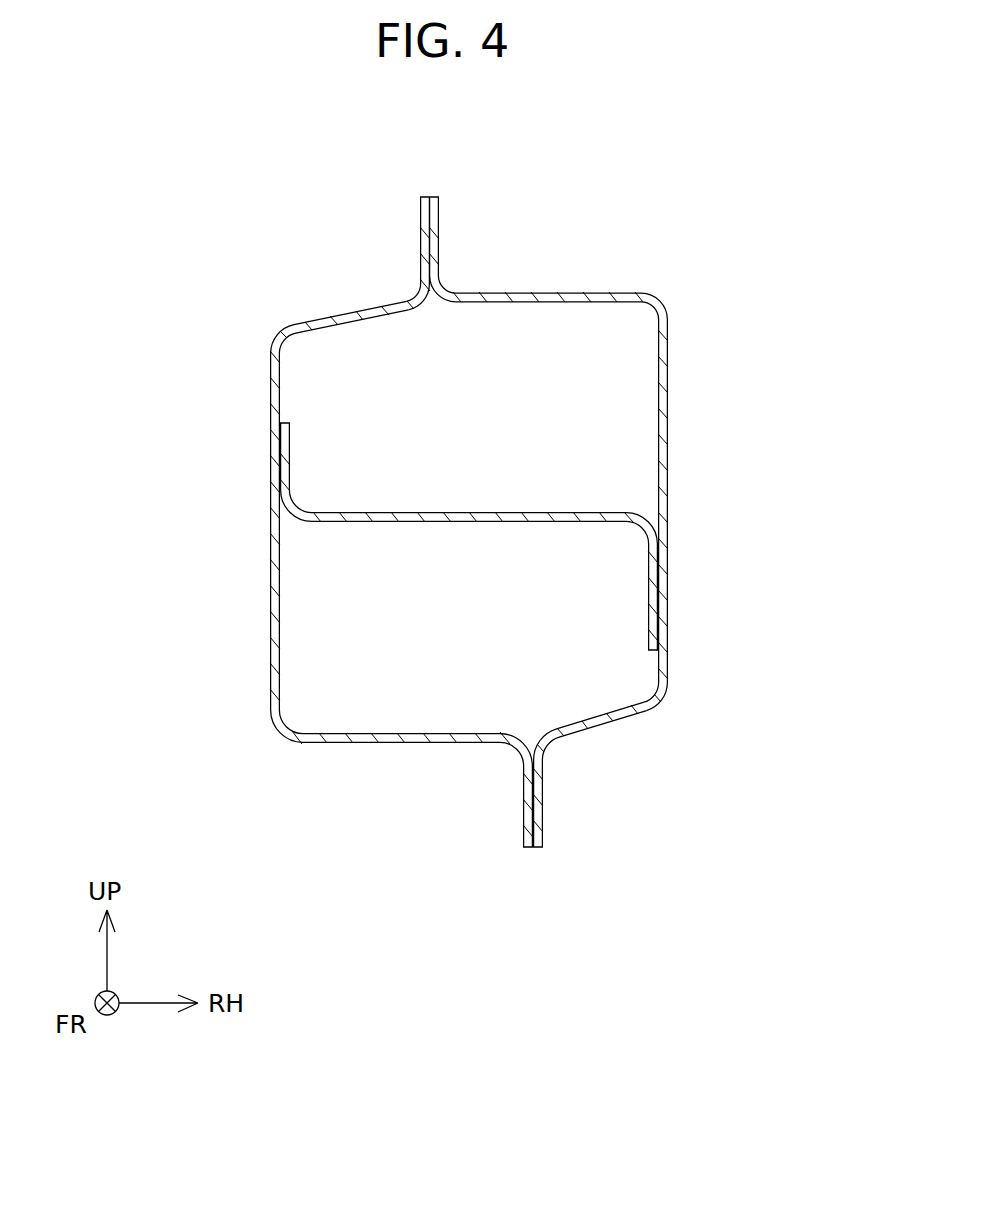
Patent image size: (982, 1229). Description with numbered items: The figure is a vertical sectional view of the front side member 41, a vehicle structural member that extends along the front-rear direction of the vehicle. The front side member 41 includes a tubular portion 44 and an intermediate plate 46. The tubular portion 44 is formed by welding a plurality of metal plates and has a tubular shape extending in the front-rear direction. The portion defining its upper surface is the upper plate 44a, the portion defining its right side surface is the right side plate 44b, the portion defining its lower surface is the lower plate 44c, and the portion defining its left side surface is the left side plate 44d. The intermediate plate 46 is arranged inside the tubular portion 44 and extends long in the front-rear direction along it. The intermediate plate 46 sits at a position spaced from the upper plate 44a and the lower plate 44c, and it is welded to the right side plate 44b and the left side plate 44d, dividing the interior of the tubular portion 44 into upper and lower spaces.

The front side member 41 is at (244, 152).
The tubular portion 44 is at (481, 522).
The upper plate 44a is at (552, 302).
The right side plate 44b is at (663, 432).
The lower plate 44c is at (410, 745).
The left side plate 44d is at (272, 575).
The intermediate plate 46 is at (522, 520).